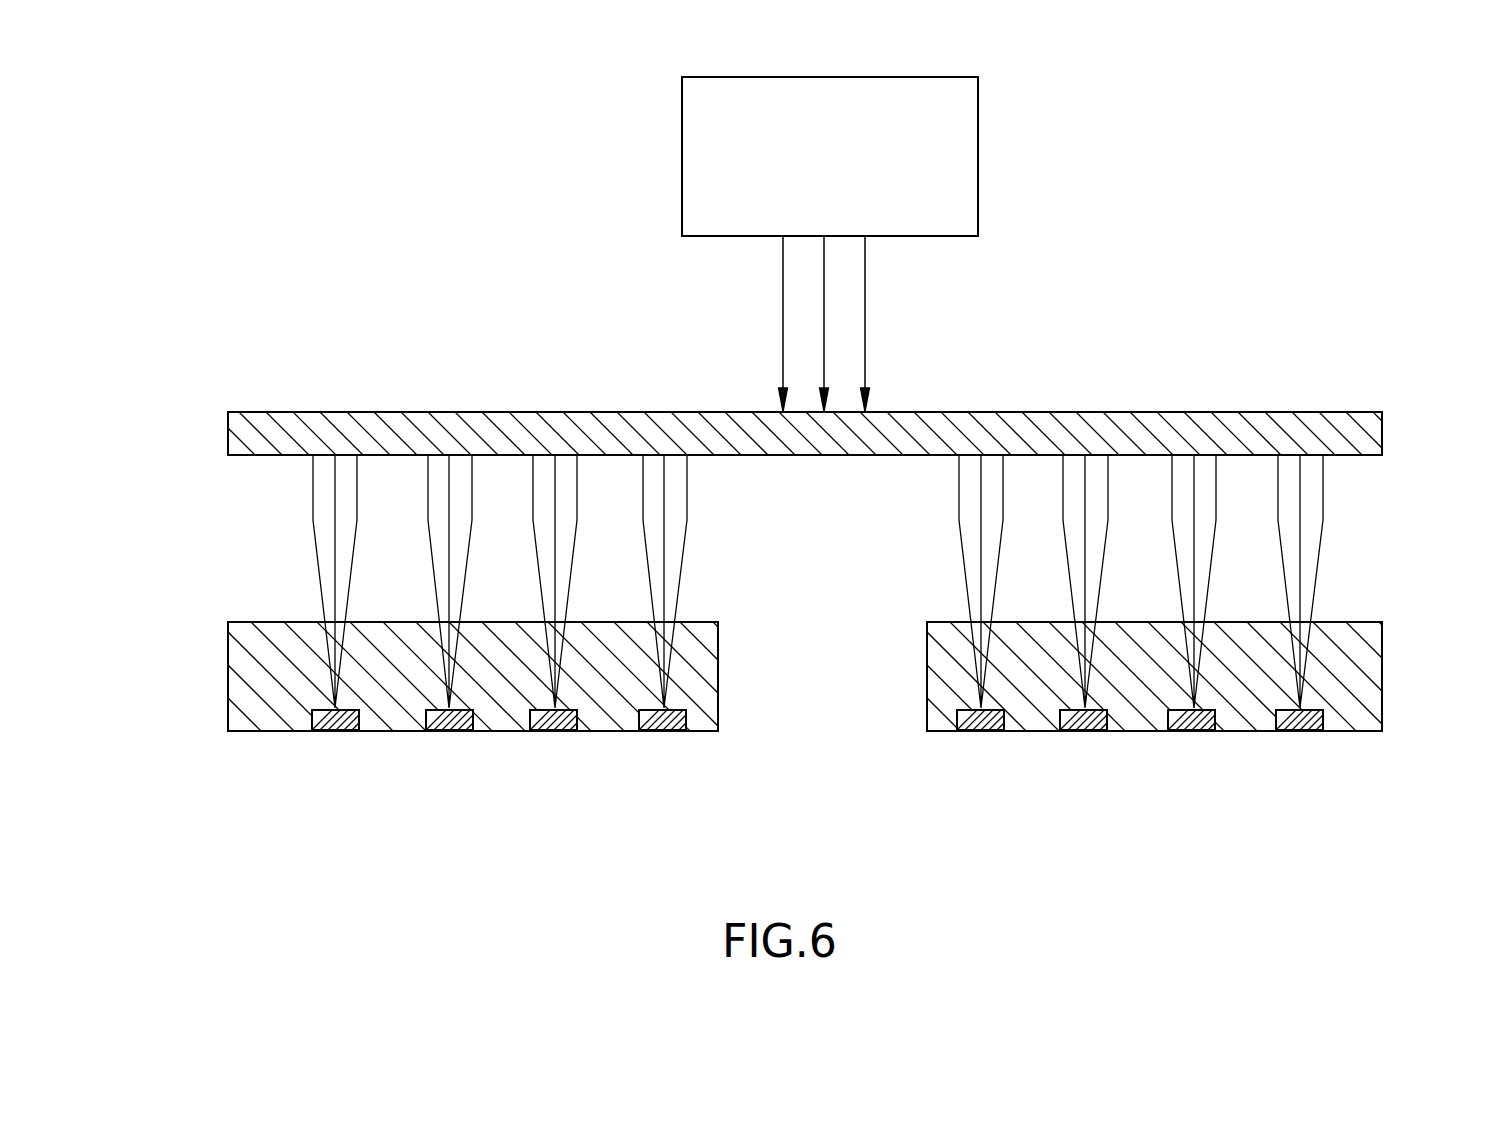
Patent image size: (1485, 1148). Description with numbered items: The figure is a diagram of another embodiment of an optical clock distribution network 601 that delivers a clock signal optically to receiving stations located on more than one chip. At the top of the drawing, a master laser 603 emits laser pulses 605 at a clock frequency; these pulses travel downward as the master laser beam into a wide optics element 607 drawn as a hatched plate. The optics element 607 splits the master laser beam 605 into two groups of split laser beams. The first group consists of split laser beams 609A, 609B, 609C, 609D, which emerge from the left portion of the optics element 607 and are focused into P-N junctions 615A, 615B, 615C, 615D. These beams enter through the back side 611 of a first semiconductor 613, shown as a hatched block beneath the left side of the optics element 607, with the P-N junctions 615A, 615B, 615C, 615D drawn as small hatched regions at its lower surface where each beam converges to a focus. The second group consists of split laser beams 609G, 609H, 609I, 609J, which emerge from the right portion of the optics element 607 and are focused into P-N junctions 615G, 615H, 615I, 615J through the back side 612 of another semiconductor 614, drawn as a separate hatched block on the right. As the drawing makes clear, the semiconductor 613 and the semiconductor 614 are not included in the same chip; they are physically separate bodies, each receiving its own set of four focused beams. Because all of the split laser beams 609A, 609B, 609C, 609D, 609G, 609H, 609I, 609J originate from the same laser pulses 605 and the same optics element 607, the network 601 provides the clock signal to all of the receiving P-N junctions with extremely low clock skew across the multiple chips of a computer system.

The optical clock distribution network 601 is at (1345, 103).
The master laser 603 is at (978, 159).
The laser pulses 605 is at (865, 328).
The optics element 607 is at (1282, 412).
The split laser beam 609A is at (313, 515).
The split laser beam 609B is at (428, 515).
The split laser beam 609C is at (533, 515).
The split laser beam 609D is at (643, 515).
The split laser beam 609G is at (959, 515).
The split laser beam 609H is at (1063, 515).
The split laser beam 609I is at (1172, 515).
The split laser beam 609J is at (1278, 515).
The back side 611 is at (700, 622).
The back side 612 is at (1357, 622).
The semiconductor 613 is at (718, 693).
The semiconductor 614 is at (1382, 694).
The P-N junction 615A is at (320, 735).
The P-N junction 615B is at (432, 735).
The P-N junction 615C is at (545, 735).
The P-N junction 615D is at (658, 735).
The P-N junction 615G is at (980, 735).
The P-N junction 615H is at (1087, 735).
The P-N junction 615I is at (1197, 735).
The P-N junction 615J is at (1305, 735).